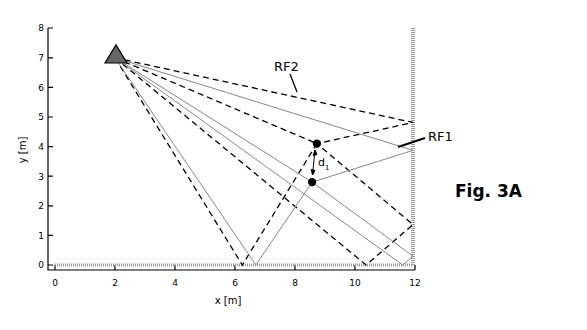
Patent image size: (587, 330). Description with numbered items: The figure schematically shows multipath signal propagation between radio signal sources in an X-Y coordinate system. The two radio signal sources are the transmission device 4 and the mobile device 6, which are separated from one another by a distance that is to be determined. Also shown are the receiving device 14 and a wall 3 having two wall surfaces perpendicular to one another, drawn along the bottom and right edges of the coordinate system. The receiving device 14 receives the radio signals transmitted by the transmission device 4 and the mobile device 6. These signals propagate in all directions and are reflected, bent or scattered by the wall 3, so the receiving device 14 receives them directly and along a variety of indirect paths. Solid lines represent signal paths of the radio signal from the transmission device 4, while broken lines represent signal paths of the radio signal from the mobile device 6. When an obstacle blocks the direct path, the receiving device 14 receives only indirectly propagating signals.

The receiving device 14 is at (120, 52).
The wall 3 is at (137, 264).
The mobile device 6 is at (321, 144).
The transmission device 4 is at (316, 183).